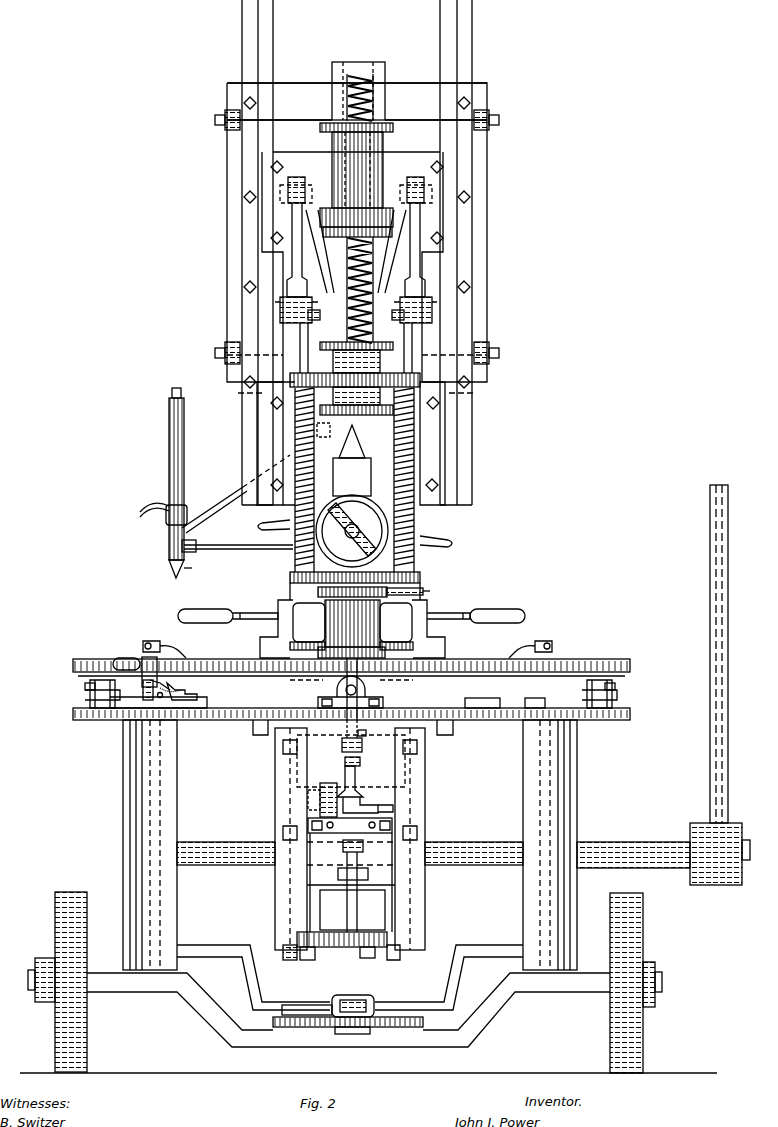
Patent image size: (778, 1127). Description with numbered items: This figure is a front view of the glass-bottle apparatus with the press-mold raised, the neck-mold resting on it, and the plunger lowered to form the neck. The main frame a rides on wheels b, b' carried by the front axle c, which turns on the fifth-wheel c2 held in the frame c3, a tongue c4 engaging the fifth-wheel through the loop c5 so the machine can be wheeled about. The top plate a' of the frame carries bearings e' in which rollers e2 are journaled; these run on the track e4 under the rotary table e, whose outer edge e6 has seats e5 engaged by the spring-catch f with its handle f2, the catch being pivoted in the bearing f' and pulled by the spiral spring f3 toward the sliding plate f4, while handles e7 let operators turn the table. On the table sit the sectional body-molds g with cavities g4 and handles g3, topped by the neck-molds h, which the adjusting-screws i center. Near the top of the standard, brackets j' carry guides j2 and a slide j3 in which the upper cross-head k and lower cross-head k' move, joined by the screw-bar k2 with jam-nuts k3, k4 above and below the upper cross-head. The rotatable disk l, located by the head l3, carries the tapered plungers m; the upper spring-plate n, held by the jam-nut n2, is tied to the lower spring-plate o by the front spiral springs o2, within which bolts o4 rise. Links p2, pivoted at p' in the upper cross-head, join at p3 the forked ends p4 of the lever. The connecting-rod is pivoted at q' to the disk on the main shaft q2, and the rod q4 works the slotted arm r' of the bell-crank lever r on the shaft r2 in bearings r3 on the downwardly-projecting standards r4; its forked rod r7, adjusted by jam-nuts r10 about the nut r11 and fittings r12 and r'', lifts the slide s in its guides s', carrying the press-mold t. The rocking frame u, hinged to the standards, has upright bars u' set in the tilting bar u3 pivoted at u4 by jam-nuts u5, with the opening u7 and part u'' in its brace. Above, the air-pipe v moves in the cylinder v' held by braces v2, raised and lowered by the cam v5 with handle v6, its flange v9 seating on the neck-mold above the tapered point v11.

The vertical column of frame j3 is at (242, 40).
The guides j2 is at (227, 270).
The brackets j' is at (357, 101).
The main frame a is at (346, 503).
The screw-bar k2 is at (378, 78).
The jam-nut k3 is at (330, 135).
The upper cross-head k is at (373, 170).
The jam-nut k4 is at (356, 275).
The pivot of links in upper cross-head p' is at (356, 188).
The links p2 is at (292, 218).
The lower pivot ends of links p3 is at (275, 310).
The bolts o4 is at (356, 323).
The forked ends of forked lever p4 is at (353, 348).
The upper spring-plate n is at (358, 378).
The jam-nut n2 is at (356, 396).
The front spiral springs o2 is at (414, 432).
The lower cross-head k' is at (272, 443).
The rotatable disk l is at (352, 496).
The head of forked bar l3 is at (352, 532).
The tapered plungers m is at (262, 527).
The lower spring-plate o is at (290, 578).
The neck-molds h is at (318, 592).
The adjusting-screws i is at (420, 588).
The press-mold t is at (351, 629).
The cavities of body-molds g4 is at (352, 622).
The body-molds g is at (278, 627).
The handles of body-molds g3 is at (215, 609).
The outer edge of rotary table e6 is at (596, 659).
The rotary table e is at (351, 659).
The top plate a' is at (351, 728).
The bearings e' is at (328, 695).
The wheels or rollers e2 is at (85, 684).
The handle of spring-catch f2 is at (122, 658).
The spring-catch f is at (142, 657).
The handles of rotary table e7 is at (560, 638).
The bearing of spring-catch f' is at (147, 690).
The sliding plate f4 is at (200, 698).
The spiral spring f3 is at (175, 708).
The slide s is at (341, 689).
The guides of slide s' is at (346, 739).
The track e4 is at (482, 695).
The seats e5 is at (535, 694).
The pivot of connecting-rod to disk q' is at (717, 685).
The main shaft q2 is at (210, 865).
The downwardly-projecting standards r4 is at (275, 770).
The bell-crank lever r is at (328, 826).
The right and left hand nut r11 is at (342, 740).
The nut r12 is at (371, 735).
The jam-nuts r10 is at (345, 760).
The forked rod r7 is at (357, 775).
The elbow u'' is at (360, 794).
The block r'' is at (314, 800).
The opening in cross-brace u7 is at (380, 815).
The pivot of tilting bar u4 is at (355, 897).
The bearings of bell-crank shaft r3 is at (358, 847).
The shaft of bell-crank lever r2 is at (353, 873).
The upright bars u' is at (351, 882).
The rod q4 is at (352, 910).
The rocking frame u is at (342, 931).
The jam-nuts u5 is at (294, 960).
The slotted arm of bell-crank lever r' is at (313, 965).
The tilting bar u3 is at (368, 961).
The loop c5 is at (370, 996).
The fifth-wheel c2 is at (322, 1027).
The tongue c4 is at (356, 1034).
The frame of fifth-wheel c3 is at (248, 985).
The front axle c is at (147, 990).
The wheel b is at (57, 982).
The wheel b' is at (639, 983).
The air-pipe v is at (161, 474).
The flange v9 is at (169, 562).
The tapered point v11 is at (199, 571).
The cam v5 is at (166, 520).
The handle of cam v6 is at (147, 506).
The cylinder v' is at (212, 547).
The braces v2 is at (215, 503).